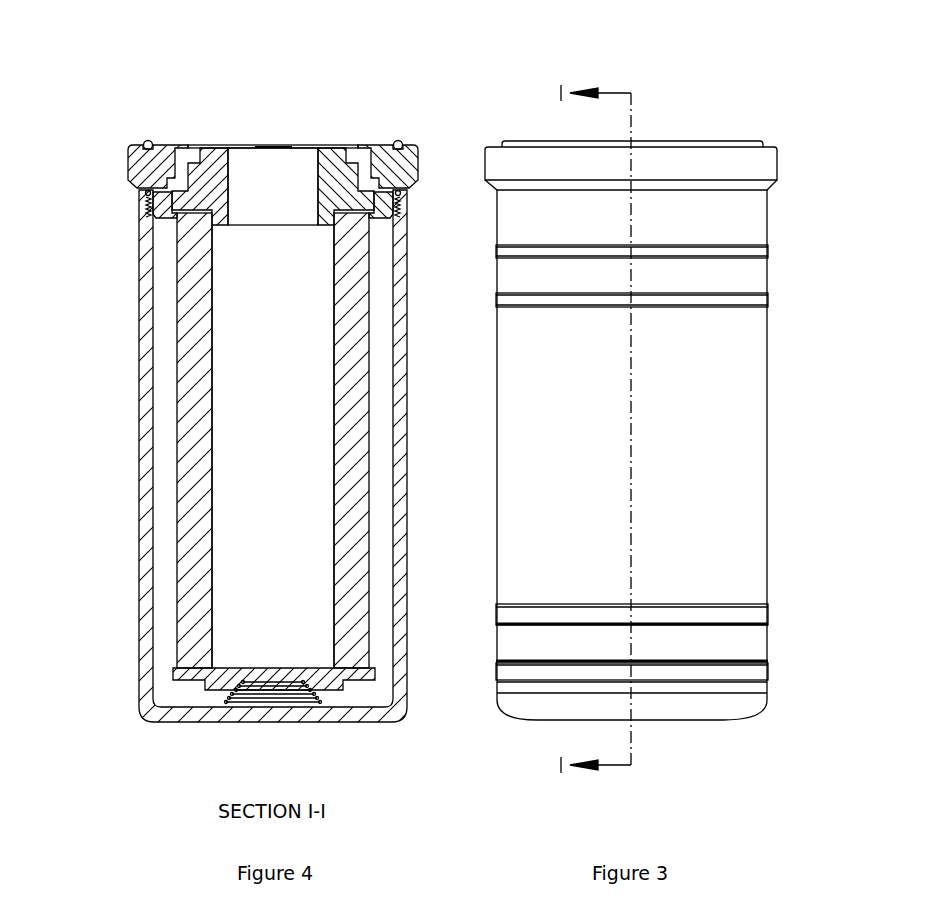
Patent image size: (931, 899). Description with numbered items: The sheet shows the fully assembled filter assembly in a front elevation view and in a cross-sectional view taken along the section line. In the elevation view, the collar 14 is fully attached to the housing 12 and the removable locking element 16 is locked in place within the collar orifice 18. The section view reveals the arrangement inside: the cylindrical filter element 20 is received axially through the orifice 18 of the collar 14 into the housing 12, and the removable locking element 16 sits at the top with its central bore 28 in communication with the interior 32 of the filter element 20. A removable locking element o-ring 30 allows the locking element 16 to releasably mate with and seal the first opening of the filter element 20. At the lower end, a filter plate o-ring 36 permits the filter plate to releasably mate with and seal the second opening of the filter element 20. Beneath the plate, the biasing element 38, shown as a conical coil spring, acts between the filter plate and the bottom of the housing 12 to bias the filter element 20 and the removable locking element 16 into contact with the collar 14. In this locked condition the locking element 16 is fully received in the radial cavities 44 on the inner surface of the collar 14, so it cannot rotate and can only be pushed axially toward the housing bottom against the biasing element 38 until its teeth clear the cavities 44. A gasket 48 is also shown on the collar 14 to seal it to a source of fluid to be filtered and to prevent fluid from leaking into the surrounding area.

In FIG. 4, the housing 12 is at (148, 445).
In FIG. 3, the housing 12 is at (720, 453).
In FIG. 4, the collar 14 is at (150, 168).
In FIG. 3, the collar 14 is at (768, 162).
In FIG. 4, the removable locking element 16 is at (148, 200).
In FIG. 4, the orifice 18 is at (210, 150).
In FIG. 4, the filter element 20 is at (195, 520).
In FIG. 4, the central bore 28 is at (317, 152).
In FIG. 4, the removable locking element o-ring 30 is at (210, 218).
In FIG. 4, the interior 32 is at (275, 622).
In FIG. 4, the filter plate o-ring 36 is at (202, 678).
In FIG. 4, the biasing element 38 is at (235, 693).
In FIG. 4, the radial cavities 44 is at (150, 141).
In FIG. 4, the gasket 48 is at (400, 141).